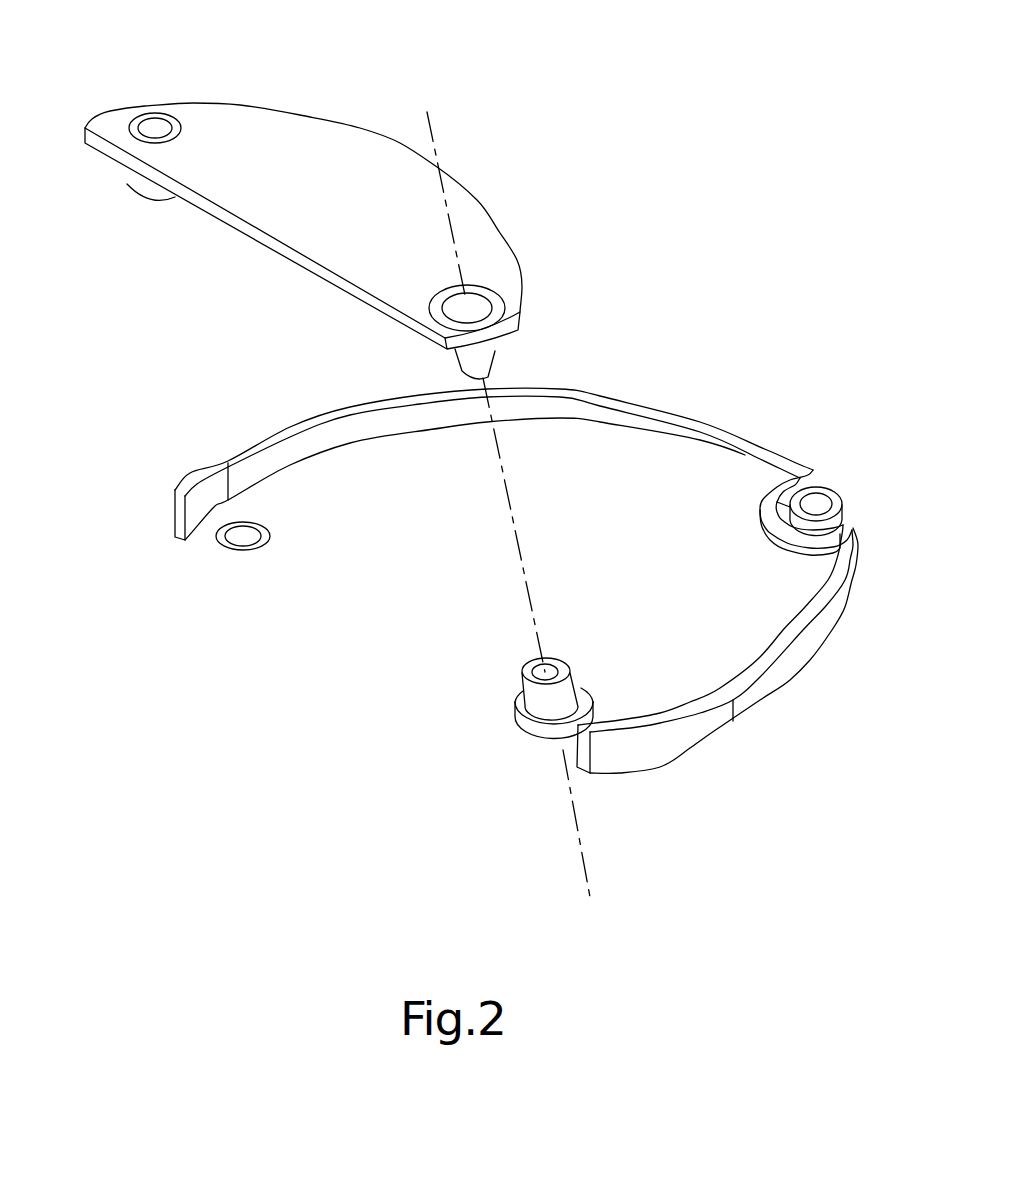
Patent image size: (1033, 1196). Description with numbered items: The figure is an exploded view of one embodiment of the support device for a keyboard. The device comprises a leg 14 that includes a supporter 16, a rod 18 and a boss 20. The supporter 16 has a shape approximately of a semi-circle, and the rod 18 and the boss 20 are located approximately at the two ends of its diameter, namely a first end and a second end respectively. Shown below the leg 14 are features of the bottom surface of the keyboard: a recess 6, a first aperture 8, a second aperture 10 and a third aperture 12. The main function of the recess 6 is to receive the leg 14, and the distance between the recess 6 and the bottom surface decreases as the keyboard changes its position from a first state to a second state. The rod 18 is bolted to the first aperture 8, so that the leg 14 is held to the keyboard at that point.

The recess 6 is at (672, 468).
The first aperture 8 is at (530, 698).
The second aperture 10 is at (243, 539).
The third aperture 12 is at (840, 488).
The leg 14 is at (240, 107).
The supporter 16 is at (347, 157).
The rod 18 is at (480, 363).
The boss 20 is at (140, 192).